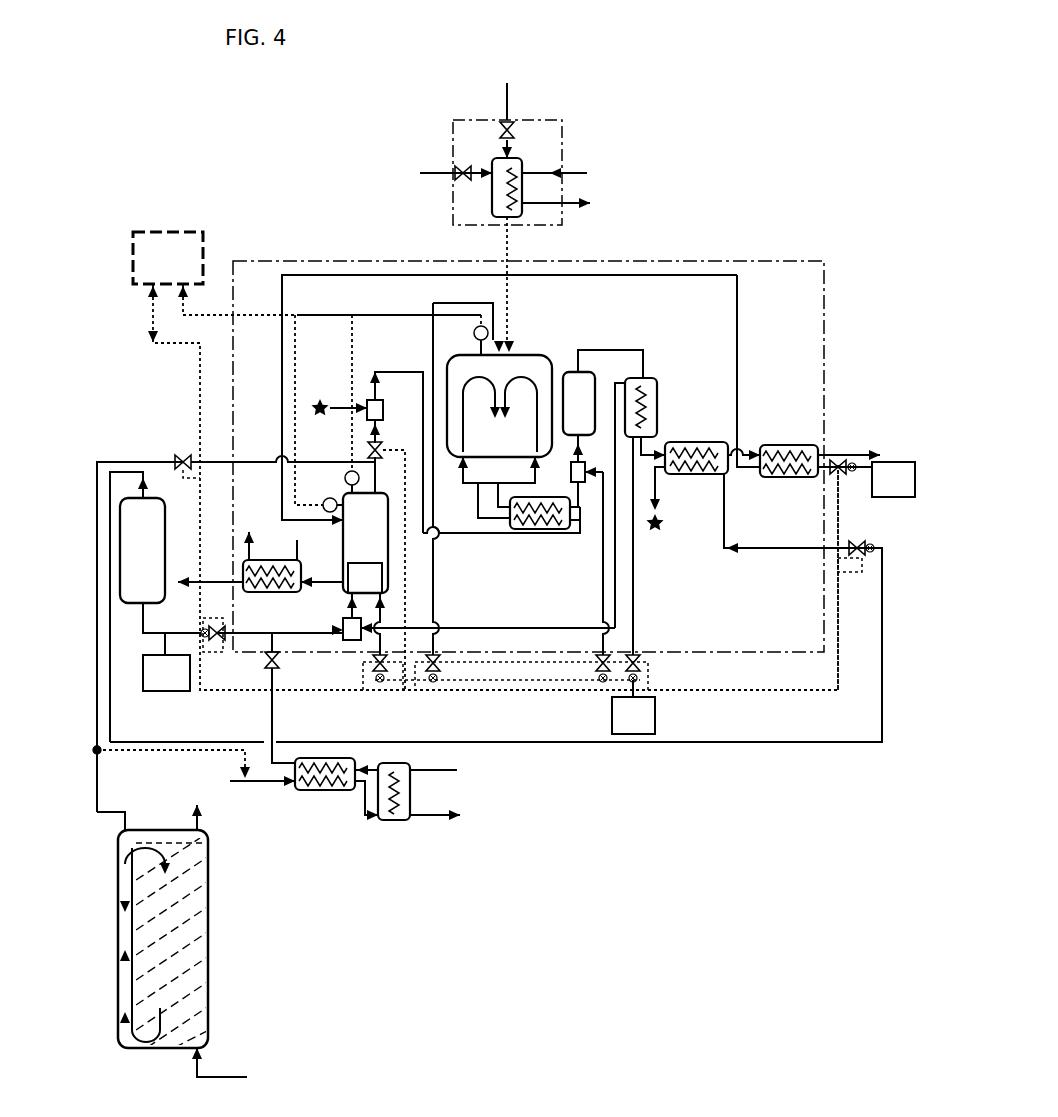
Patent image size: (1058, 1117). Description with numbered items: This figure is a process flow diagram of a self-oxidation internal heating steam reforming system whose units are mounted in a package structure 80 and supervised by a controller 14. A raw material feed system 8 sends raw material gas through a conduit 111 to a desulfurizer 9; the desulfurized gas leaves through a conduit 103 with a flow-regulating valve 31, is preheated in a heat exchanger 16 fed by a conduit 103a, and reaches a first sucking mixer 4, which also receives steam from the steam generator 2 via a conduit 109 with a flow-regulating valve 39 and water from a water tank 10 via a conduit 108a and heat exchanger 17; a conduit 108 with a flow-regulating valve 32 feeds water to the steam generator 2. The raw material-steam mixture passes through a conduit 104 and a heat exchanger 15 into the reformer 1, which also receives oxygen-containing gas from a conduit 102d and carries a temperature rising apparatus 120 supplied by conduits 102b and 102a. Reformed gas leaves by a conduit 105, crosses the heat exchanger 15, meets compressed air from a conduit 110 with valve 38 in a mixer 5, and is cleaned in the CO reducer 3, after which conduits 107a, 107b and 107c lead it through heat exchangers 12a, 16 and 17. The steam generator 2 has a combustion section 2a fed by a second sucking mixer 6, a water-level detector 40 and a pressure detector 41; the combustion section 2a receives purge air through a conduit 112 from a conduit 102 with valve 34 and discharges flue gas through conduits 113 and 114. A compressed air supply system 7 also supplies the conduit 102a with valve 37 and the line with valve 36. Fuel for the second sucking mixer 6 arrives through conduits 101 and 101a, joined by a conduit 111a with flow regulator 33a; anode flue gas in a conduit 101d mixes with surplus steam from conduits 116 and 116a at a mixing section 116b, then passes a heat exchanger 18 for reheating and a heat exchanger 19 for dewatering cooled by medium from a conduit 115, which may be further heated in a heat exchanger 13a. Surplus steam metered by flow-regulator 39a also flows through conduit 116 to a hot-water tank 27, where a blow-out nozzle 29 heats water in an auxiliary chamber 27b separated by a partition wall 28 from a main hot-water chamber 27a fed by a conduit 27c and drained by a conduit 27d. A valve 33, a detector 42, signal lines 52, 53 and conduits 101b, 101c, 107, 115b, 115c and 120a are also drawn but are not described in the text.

The reformer 1 is at (450, 360).
The steam generator 2 is at (390, 535).
The combustion section 2a is at (382, 580).
The CO reducer 3 is at (566, 372).
The first sucking mixer 4 is at (380, 398).
The mixer 5 is at (592, 478).
The second sucking mixer 6 is at (352, 645).
The compressed air supply system 7 is at (655, 715).
The raw material feed system 8 is at (143, 670).
The desulfurizer 9 is at (120, 548).
The water tank 10 is at (895, 497).
The heat exchanger 12a is at (657, 392).
The heat exchanger 13a is at (228, 652).
The controller 14 is at (178, 230).
The heat exchanger 15 is at (540, 530).
The heat exchanger 16 is at (690, 445).
The heat exchanger 17 is at (790, 445).
The heat exchanger for reheating 18 is at (322, 792).
The heat exchanger for dewatering 19 is at (392, 822).
The hot-water tank 27 is at (208, 975).
The main hot-water chamber 27a is at (170, 905).
The auxiliary chamber 27b is at (128, 935).
The conduit 27c is at (235, 1077).
The conduit 27d is at (200, 812).
The partition wall 28 is at (160, 935).
The blow-out nozzle 29 is at (130, 880).
The flow-regulating valve 31 is at (858, 572).
The flow-regulating valve 32 is at (832, 472).
The valve 33 is at (278, 670).
The flow regulator 33a is at (215, 645).
The flow regulating valve 34 is at (385, 675).
The flow-regulating valve 36 is at (442, 665).
The flow-regulating valve 37 is at (642, 663).
The flow-regulating valve 38 is at (596, 663).
The flow-regulating valve 39 is at (384, 450).
The flow-regulator 39a is at (177, 457).
The water-level detector 40 is at (324, 500).
The pressure detector 41 is at (345, 472).
The temperature sensor 42 is at (478, 326).
The signal line 52 is at (250, 314).
The signal line 53 is at (150, 330).
The package structure 80 is at (680, 262).
The conduit 101 is at (300, 640).
The conduit 101a is at (273, 745).
The pipe 101b is at (380, 762).
The pipe 101c is at (355, 815).
The conduit 101d is at (280, 793).
The conduit 102 is at (518, 692).
The conduit 102a is at (633, 590).
The conduit 102b is at (420, 170).
The conduit 102d is at (495, 317).
The conduit 103 is at (135, 470).
The conduit 103a is at (657, 518).
The conduit 104 is at (507, 105).
The conduit 105 is at (580, 535).
The exhaust pipe 107 is at (610, 350).
The conduit 107a is at (648, 450).
The conduit 107b is at (740, 455).
The conduit 107c is at (845, 455).
The conduit 108 is at (282, 345).
The conduit 108a is at (338, 400).
The conduit 109 is at (456, 479).
The conduit 110 is at (603, 600).
The conduit 111 is at (143, 632).
The conduit 111a is at (248, 640).
The conduit 112 is at (400, 628).
The conduit 113 is at (343, 635).
The conduit 114 is at (217, 585).
The conduit 115 is at (457, 770).
The hot water pipe 115b is at (297, 540).
The hot water pipe 115c is at (240, 545).
The conduit 116 is at (97, 790).
The conduit 116a is at (185, 752).
The mixing section 116b is at (245, 785).
The temperature rising apparatus 120 is at (522, 165).
The pipe 120a is at (565, 173).